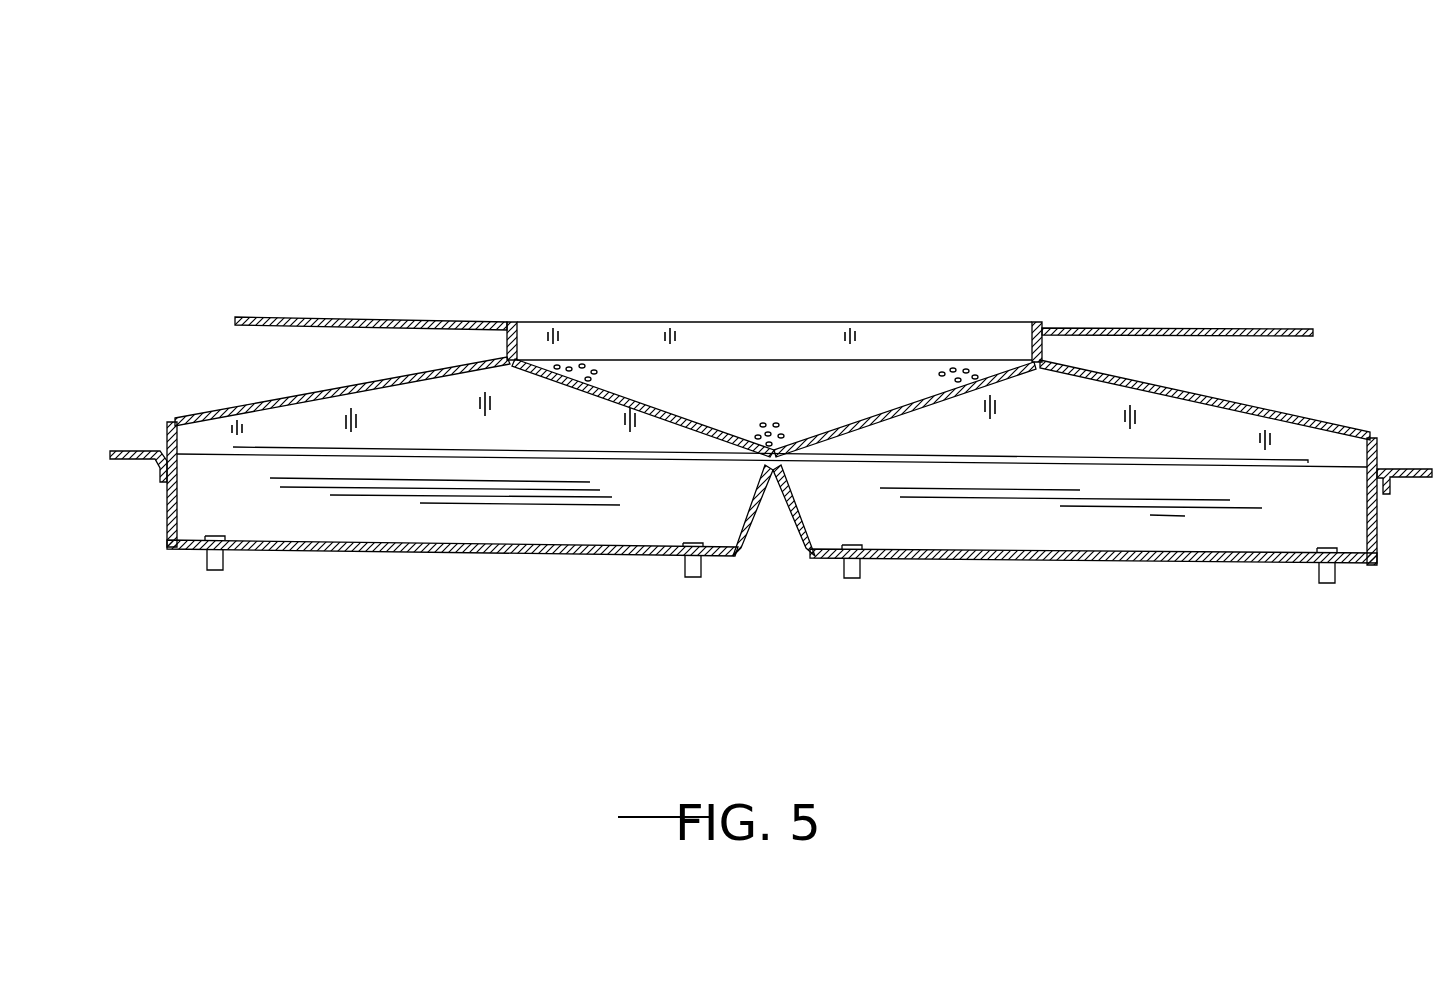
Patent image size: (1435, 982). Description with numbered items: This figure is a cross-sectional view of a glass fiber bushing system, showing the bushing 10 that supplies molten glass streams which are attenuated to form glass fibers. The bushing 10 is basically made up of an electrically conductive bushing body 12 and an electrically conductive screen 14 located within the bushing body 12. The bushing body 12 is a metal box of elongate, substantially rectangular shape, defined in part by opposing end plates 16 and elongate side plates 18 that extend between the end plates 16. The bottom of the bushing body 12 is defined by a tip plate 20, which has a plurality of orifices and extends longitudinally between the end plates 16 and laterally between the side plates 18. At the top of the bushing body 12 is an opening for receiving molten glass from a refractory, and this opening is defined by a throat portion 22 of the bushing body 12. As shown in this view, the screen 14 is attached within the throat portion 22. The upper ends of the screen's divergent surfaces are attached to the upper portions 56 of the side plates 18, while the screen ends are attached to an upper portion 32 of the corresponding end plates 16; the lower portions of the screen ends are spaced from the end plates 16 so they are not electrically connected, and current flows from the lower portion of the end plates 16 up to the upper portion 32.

The bushing 10 is at (1133, 218).
The bushing body 12 is at (1290, 390).
The screen 14 is at (940, 312).
The end plates 16 is at (300, 422).
The side plates 18 is at (210, 410).
The tip plate 20 is at (1348, 565).
The throat portion 22 is at (1035, 320).
The upper portion of the end plates 32 is at (530, 380).
The upper portions of the side plates 56 is at (497, 347).